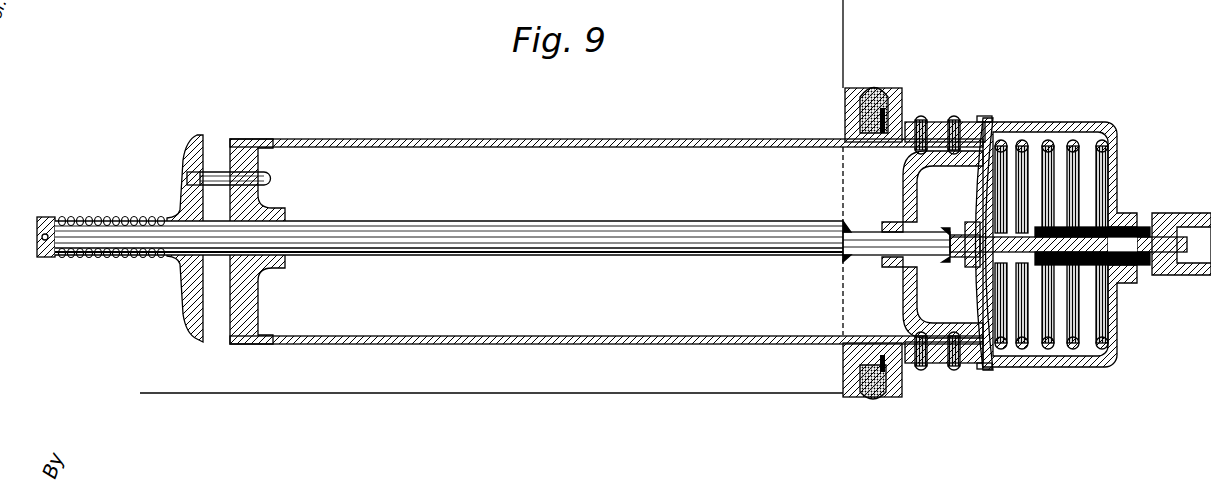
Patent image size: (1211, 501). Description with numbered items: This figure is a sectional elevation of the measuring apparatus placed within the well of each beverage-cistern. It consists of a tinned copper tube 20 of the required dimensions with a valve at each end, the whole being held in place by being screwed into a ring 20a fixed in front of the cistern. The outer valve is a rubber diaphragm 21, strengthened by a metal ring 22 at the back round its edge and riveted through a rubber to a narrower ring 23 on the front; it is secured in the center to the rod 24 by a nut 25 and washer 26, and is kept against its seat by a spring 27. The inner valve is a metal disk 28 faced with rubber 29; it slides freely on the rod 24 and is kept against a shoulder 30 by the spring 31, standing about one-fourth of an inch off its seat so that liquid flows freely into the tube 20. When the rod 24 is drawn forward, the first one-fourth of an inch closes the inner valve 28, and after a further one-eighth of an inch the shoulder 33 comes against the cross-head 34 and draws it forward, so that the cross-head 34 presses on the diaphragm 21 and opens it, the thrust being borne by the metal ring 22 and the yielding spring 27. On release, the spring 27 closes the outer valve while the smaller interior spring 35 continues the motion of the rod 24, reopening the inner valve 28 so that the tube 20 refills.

The tube 20 is at (606, 241).
The ring 20a is at (856, 397).
The rubber diaphragm 21 is at (980, 188).
The metal ring 22 is at (998, 123).
The narrower ring 23 is at (983, 128).
The rod 24 is at (612, 239).
The nut 25 is at (956, 259).
The washer 26 is at (972, 268).
The spring 27 is at (1072, 300).
The metal disk 28 is at (184, 292).
The rubber 29 is at (203, 339).
The shoulder 30 is at (229, 195).
The spring 31 is at (112, 244).
The shoulder 33 is at (846, 254).
The cross-head 34 is at (905, 194).
The smaller interior spring 35 is at (1056, 222).